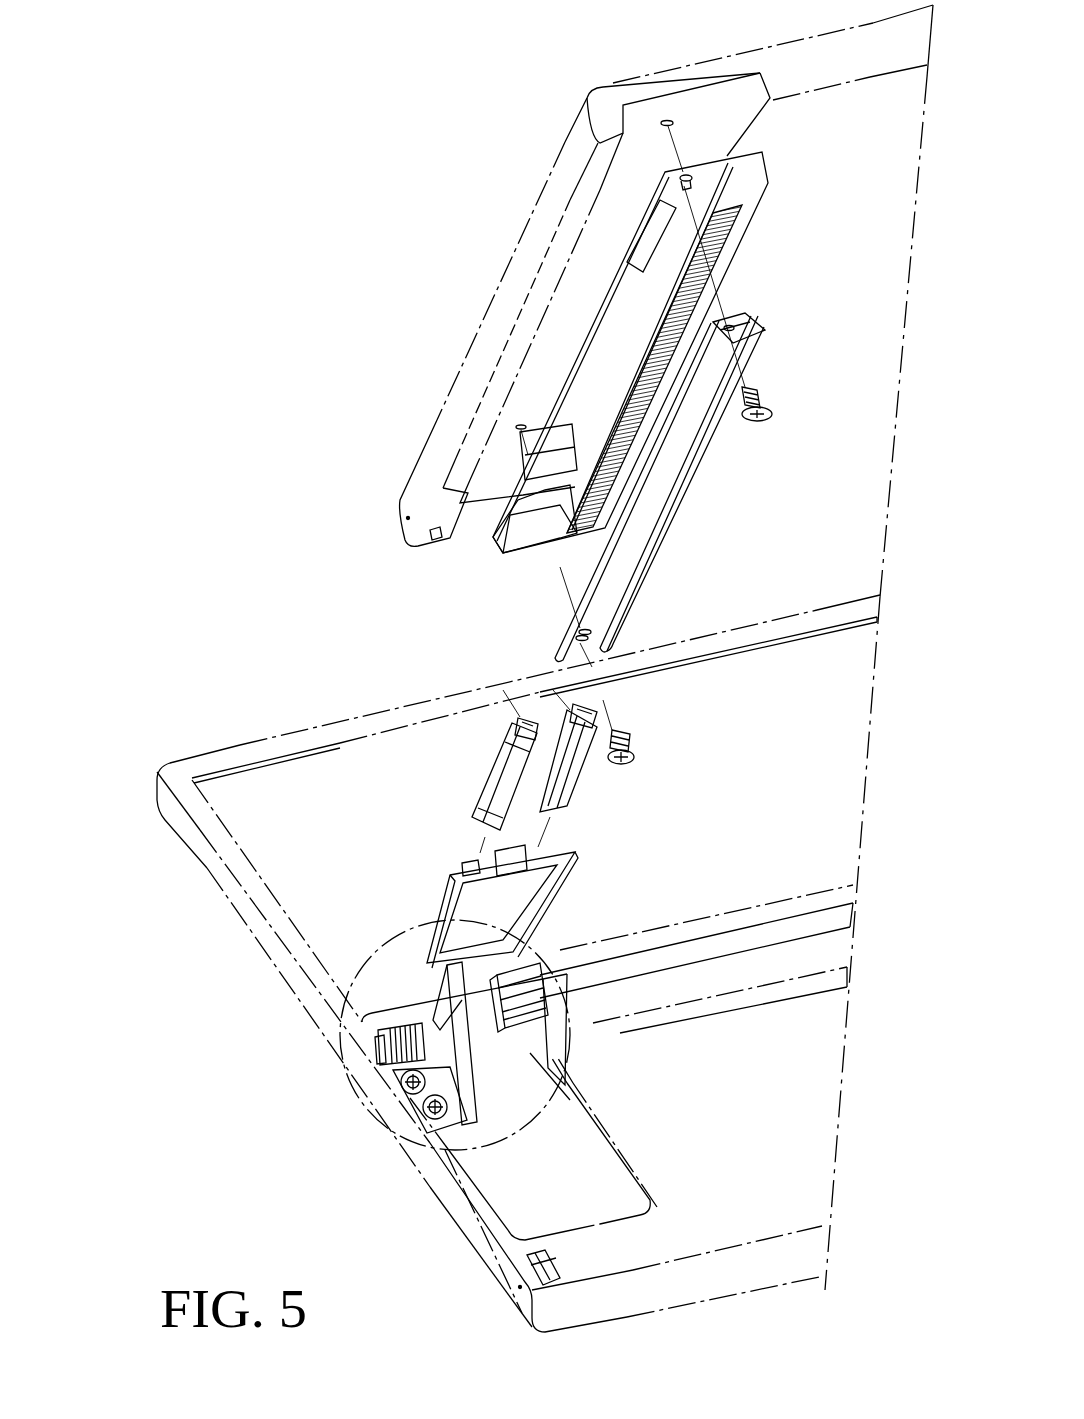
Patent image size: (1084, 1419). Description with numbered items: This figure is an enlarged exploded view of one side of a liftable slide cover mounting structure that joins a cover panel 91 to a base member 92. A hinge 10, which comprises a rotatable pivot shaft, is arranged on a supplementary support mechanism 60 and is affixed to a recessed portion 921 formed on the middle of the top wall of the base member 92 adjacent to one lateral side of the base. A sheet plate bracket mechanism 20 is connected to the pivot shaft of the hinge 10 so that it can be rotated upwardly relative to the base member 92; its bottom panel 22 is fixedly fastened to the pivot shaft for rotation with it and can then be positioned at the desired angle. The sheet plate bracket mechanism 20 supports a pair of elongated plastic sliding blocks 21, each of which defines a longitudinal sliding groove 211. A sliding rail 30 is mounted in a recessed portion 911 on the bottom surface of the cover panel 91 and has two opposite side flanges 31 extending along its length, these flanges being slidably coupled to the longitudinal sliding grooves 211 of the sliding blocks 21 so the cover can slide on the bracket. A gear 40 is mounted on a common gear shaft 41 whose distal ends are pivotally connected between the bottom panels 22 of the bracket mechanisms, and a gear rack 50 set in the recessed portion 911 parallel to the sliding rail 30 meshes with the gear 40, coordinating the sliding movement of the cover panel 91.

The hinge 10 is at (383, 1058).
The sheet plate bracket mechanism 20 is at (548, 937).
The elongated plastic sliding block 21 is at (487, 780).
The longitudinal sliding groove 211 is at (577, 713).
The bottom panel 22 is at (453, 992).
The sliding rail 30 is at (695, 460).
The side flange 31 is at (700, 365).
The gear 40 is at (545, 1018).
The gear shaft 41 is at (753, 940).
The gear rack 50 is at (717, 247).
The supplementary support mechanism 60 is at (417, 1090).
The cover panel 91 is at (540, 227).
The recessed portion 911 is at (700, 123).
The base member 92 is at (205, 835).
The recessed portion 921 is at (430, 1203).